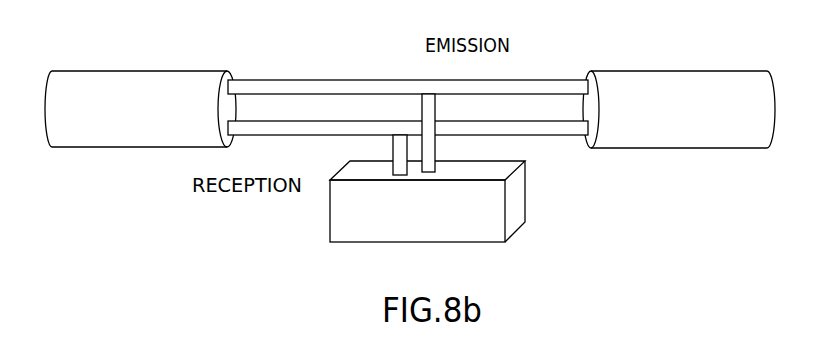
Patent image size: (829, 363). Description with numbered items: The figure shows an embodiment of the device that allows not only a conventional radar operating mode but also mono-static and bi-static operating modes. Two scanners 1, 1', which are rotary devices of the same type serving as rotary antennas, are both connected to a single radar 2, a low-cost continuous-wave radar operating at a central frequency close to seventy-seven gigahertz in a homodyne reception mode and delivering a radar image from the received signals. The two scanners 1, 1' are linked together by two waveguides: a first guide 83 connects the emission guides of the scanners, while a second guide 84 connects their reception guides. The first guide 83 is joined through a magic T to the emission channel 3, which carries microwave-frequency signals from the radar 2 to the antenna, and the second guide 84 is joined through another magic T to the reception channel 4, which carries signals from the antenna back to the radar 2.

The scanner 1 is at (140, 89).
The scanner 1' is at (679, 89).
The first guide 83 is at (317, 80).
The second guide 84 is at (540, 137).
The radar 2 is at (518, 208).
The emission channel 3 is at (435, 152).
The reception channel 4 is at (393, 146).